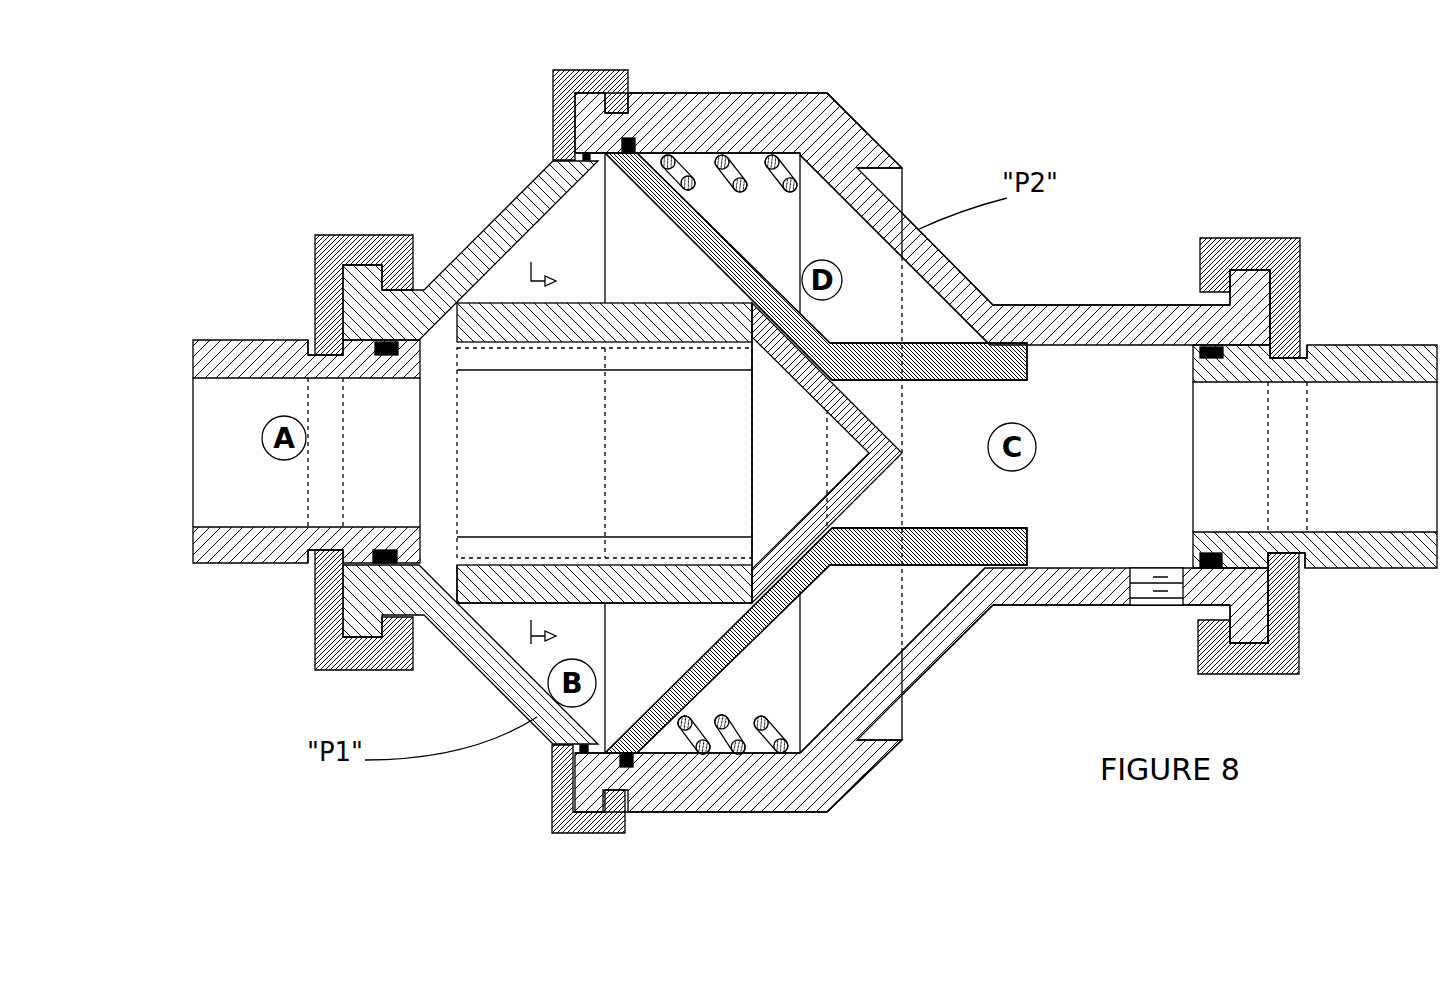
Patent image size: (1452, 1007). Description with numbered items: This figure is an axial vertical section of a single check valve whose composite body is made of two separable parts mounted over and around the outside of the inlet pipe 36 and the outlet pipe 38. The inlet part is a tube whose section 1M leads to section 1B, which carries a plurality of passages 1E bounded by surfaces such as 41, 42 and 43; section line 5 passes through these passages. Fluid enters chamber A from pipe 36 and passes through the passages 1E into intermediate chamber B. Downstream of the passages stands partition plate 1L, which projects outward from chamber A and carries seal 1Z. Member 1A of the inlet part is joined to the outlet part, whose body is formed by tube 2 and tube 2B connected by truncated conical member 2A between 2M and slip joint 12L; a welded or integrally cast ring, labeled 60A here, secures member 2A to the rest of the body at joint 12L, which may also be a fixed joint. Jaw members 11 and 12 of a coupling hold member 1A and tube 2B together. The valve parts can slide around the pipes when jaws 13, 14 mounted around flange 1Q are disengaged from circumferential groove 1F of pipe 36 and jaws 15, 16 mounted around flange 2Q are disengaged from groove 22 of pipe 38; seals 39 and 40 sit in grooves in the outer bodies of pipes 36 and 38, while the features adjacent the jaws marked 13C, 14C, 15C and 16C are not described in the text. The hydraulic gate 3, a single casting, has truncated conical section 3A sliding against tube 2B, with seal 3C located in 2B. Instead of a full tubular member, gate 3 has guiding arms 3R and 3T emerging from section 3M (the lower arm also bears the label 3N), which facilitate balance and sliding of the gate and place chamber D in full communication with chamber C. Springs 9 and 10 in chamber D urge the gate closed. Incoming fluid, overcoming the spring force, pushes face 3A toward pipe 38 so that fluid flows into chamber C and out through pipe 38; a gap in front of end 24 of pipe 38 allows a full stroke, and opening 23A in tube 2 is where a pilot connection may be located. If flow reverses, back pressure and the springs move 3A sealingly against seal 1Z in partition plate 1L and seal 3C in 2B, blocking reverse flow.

The body member 1A is at (490, 225).
The tube section 1B is at (620, 600).
The passage 1E is at (467, 372).
The circumferential groove 1F is at (312, 337).
The partition plate 1L is at (867, 470).
The tube section 1M is at (430, 600).
The flange 1Q is at (356, 650).
The seal 1Z is at (770, 412).
The outlet tube 2 is at (922, 452).
The truncated conical member 2A is at (945, 270).
The tube 2B is at (710, 100).
The conical member end 2M is at (1010, 292).
The flange 2Q is at (1253, 283).
The hydraulic gate 3 is at (807, 320).
The truncated conical section 3A is at (727, 283).
The seal 3C is at (594, 162).
The gate section 3M is at (840, 338).
The lower valve arm 3N is at (835, 570).
The guiding arm 3R is at (907, 372).
The guiding arm 3T is at (917, 537).
The section line 5 is at (558, 454).
The spring 9 is at (748, 193).
The spring 10 is at (773, 713).
The jaw member 11 is at (568, 80).
The jaw member 12 is at (560, 828).
The slip joint 12L is at (823, 100).
The coupling jaw 13 is at (330, 266).
The groove 13C is at (333, 353).
The coupling jaw 14 is at (320, 623).
The groove 14C is at (328, 548).
The coupling jaw 15 is at (1278, 262).
The groove 15C is at (1278, 365).
The coupling jaw 16 is at (1267, 668).
The groove 16C is at (1257, 511).
The circumferential groove 22 is at (1307, 342).
The opening 23A is at (1153, 607).
The pipe end 24 is at (1193, 380).
The inlet pipe 36 is at (268, 380).
The outlet pipe 38 is at (1415, 383).
The seal 39 is at (372, 550).
The seal 40 is at (1230, 382).
The passage boundary 41 is at (632, 349).
The passage boundary 42 is at (640, 557).
The passage boundary 43 is at (1218, 527).
The retaining ring 60A is at (893, 165).